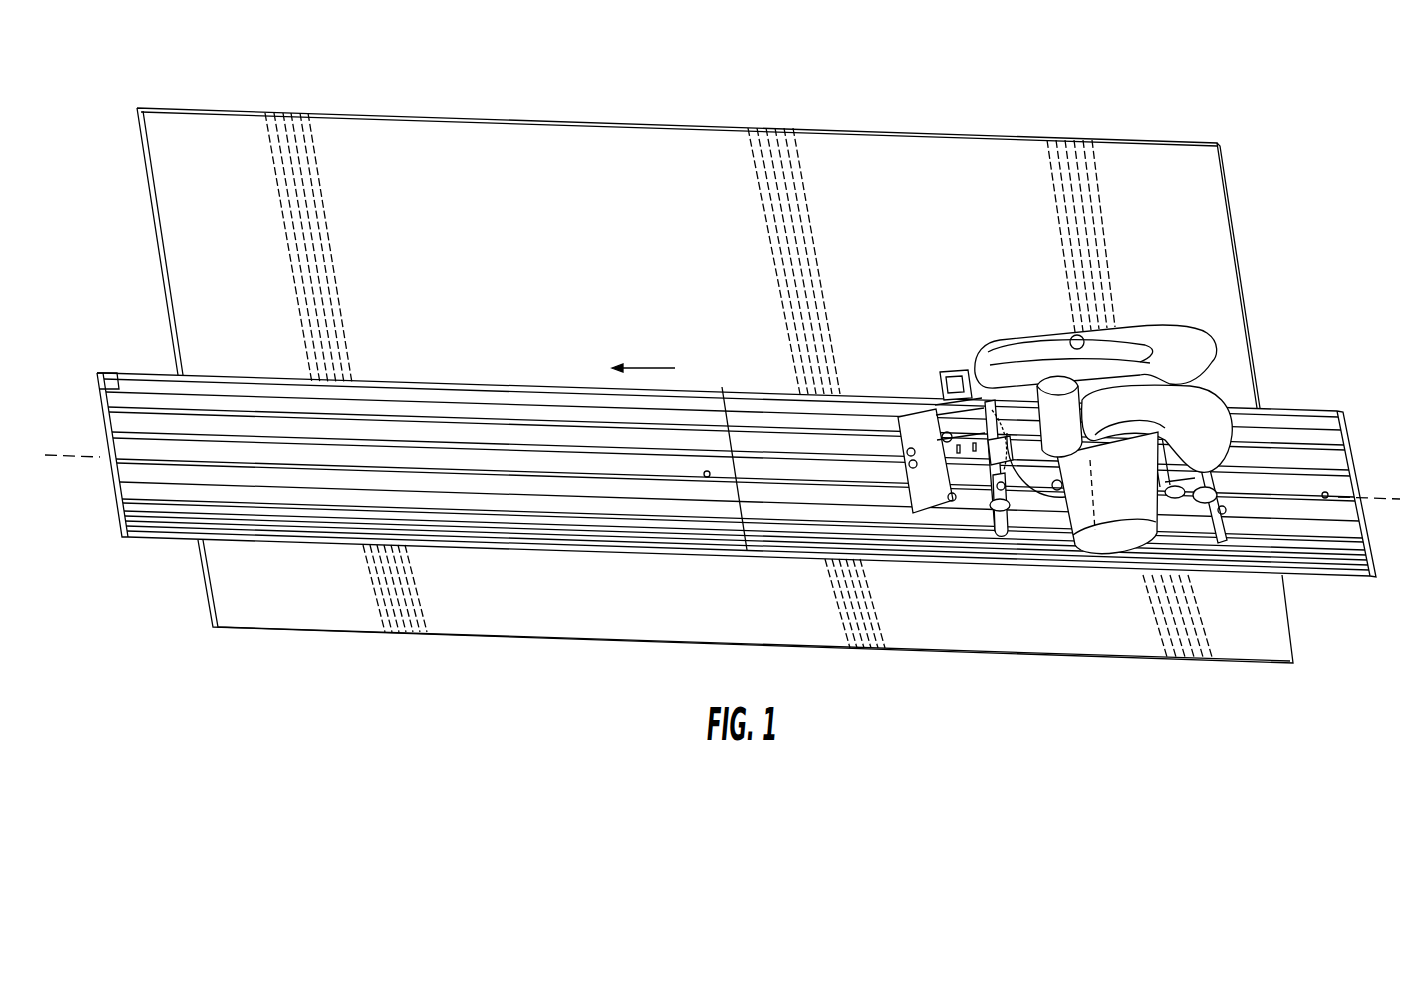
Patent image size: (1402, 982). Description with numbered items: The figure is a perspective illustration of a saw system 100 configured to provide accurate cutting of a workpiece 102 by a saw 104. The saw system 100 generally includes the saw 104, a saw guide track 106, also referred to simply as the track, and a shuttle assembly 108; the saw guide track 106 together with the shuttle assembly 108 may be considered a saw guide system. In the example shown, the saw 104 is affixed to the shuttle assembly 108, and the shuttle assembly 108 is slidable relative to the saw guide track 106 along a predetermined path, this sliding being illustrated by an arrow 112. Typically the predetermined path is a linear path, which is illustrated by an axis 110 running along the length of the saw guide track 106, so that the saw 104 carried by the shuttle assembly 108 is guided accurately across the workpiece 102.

The saw system 100 is at (722, 303).
The workpiece 102 is at (887, 155).
The saw 104 is at (1120, 338).
The saw guide track 106 is at (527, 403).
The shuttle assembly 108 is at (915, 425).
The axis 110 is at (80, 455).
The arrow 112 is at (647, 368).